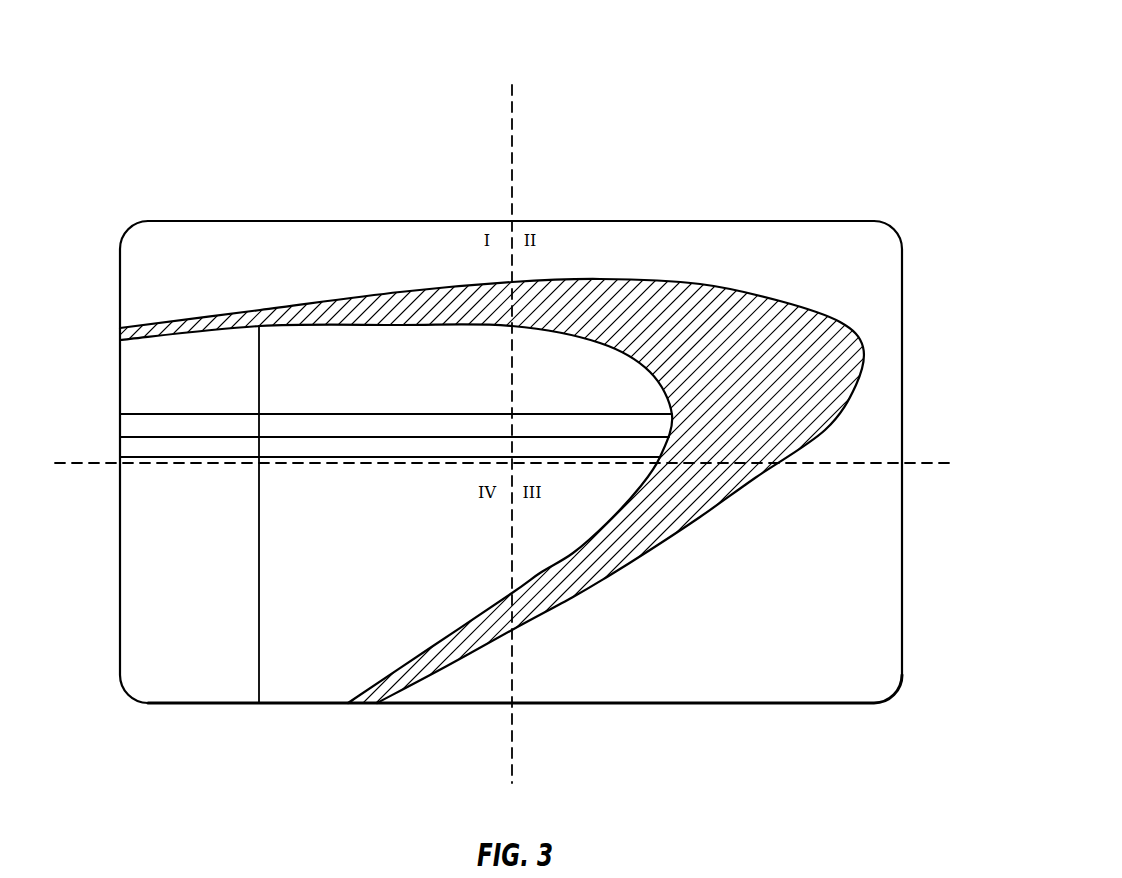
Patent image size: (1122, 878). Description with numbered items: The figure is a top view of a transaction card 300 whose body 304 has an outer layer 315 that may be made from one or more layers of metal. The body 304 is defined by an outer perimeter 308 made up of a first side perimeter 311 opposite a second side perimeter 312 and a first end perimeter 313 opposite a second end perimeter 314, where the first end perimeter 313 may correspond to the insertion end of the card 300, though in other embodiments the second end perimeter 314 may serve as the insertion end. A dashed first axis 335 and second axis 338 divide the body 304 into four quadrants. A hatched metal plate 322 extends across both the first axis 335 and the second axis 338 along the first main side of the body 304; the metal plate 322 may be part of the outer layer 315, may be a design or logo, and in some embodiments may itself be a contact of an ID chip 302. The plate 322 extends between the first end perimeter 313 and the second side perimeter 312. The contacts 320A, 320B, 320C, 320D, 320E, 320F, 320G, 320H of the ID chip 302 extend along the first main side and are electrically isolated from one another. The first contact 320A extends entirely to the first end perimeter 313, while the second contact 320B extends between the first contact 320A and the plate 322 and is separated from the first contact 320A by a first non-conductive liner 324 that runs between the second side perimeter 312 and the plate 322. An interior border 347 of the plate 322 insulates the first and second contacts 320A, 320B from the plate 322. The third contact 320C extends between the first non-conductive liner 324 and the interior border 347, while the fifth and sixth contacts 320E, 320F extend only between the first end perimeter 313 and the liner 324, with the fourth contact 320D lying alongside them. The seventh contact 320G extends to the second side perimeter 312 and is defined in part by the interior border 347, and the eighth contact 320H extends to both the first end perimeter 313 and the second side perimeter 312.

The transaction card 300 is at (733, 110).
The ID chip 302 is at (138, 401).
The body 304 is at (525, 736).
The outer perimeter 308 is at (511, 191).
The first side perimeter 311 is at (826, 220).
The second side perimeter 312 is at (752, 708).
The first end perimeter 313 is at (120, 570).
The second end perimeter 314 is at (903, 272).
The outer layer 315 is at (771, 599).
The first contact 320A is at (148, 350).
The second contact 320B is at (305, 343).
The third contact 320C is at (360, 425).
The fourth contact 320D is at (360, 448).
The fifth contact 320E is at (137, 453).
The sixth contact 320F is at (137, 427).
The seventh contact 320G is at (313, 682).
The eighth contact 320H is at (177, 688).
The metal plate 322 is at (617, 293).
The first non-conductive liner 324 is at (259, 680).
The first axis 335 is at (513, 168).
The second axis 338 is at (915, 465).
The interior border 347 is at (443, 640).